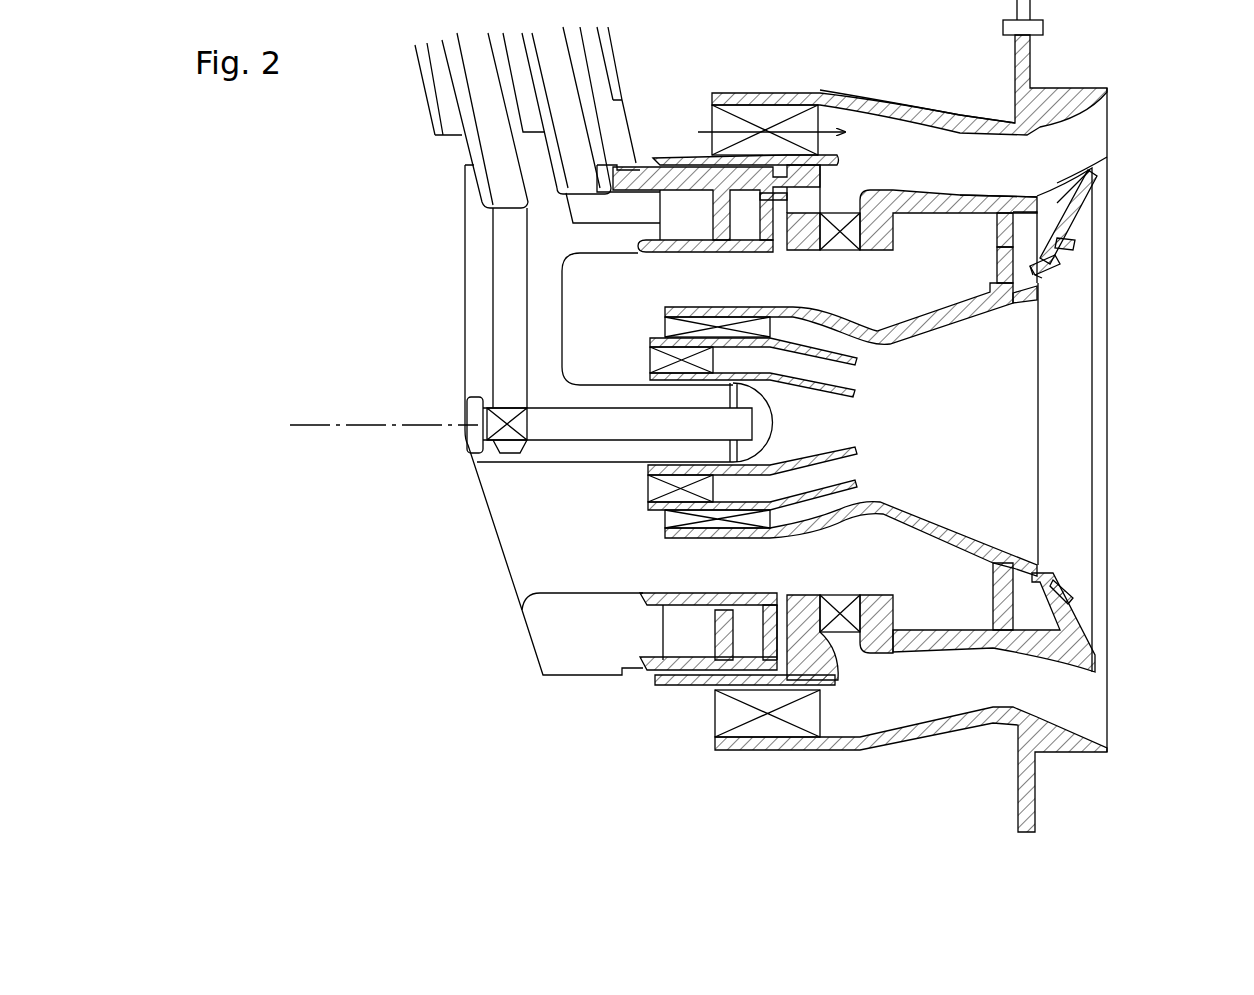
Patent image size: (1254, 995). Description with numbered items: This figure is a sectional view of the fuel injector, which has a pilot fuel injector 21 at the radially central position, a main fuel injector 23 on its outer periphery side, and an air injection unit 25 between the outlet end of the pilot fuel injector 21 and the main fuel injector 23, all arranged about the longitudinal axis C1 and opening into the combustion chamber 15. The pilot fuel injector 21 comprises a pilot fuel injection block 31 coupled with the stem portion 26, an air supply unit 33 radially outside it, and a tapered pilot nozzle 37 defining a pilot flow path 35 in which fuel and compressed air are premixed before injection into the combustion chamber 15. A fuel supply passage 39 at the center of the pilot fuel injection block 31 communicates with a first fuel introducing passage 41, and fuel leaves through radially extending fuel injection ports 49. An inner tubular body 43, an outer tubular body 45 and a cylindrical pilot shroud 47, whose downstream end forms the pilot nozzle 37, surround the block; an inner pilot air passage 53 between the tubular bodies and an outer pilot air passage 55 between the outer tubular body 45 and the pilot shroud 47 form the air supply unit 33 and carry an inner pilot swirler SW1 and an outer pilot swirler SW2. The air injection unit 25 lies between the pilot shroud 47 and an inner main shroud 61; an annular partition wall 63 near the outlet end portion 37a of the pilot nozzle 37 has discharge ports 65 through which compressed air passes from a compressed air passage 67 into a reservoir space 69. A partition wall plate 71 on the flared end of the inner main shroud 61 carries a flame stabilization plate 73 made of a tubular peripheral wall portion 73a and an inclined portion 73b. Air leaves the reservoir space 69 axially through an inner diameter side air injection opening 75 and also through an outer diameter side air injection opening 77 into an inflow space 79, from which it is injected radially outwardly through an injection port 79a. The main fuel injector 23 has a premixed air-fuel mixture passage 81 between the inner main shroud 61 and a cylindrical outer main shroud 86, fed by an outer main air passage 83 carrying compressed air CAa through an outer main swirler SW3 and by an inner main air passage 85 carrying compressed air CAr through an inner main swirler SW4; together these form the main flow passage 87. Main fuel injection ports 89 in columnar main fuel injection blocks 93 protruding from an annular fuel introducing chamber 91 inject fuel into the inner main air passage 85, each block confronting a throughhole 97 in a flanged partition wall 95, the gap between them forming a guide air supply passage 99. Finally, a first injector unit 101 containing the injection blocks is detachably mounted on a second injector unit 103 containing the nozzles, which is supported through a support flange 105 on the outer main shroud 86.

The combustion chamber 15 is at (1250, 466).
The pilot fuel injector 21 is at (1043, 433).
The main fuel injector 23 is at (1112, 118).
The air injection unit 25 is at (1080, 243).
The stem portion 26 is at (432, 100).
The pilot fuel injection block 31 is at (543, 463).
The air supply unit 33 is at (777, 413).
The pilot flow path 35 is at (964, 458).
The pilot nozzle 37 is at (930, 525).
The outlet end portion 37a is at (998, 303).
The fuel supply passage 39 is at (543, 423).
The first fuel introducing passage 41 is at (487, 127).
The inner tubular body 43 is at (660, 470).
The outer tubular body 45 is at (665, 512).
The pilot shroud 47 is at (693, 540).
The fuel injection ports 49 is at (745, 470).
The inner pilot air passage 53 is at (790, 330).
The outer pilot air passage 55 is at (812, 330).
The inner main shroud 61 is at (1057, 645).
The partition wall 63 is at (1002, 262).
The discharge ports 65 is at (1002, 230).
The compressed air passage 67 is at (921, 296).
The reservoir space 69 is at (1088, 176).
The partition wall plate 71 is at (1068, 212).
The flame stabilization plate 73 is at (1186, 278).
The peripheral wall portion 73a is at (1040, 278).
The inclined portion 73b is at (1063, 262).
The inner diameter side air injection opening 75 is at (1040, 300).
The outer diameter side air injection opening 77 is at (1043, 217).
The inflow space 79 is at (1070, 248).
The injection port 79a is at (1062, 244).
The premixed air-fuel mixture passage 81 is at (985, 185).
The outer main air passage 83 is at (822, 115).
The inner main air passage 85 is at (942, 133).
The outer main shroud 86 is at (1071, 88).
The main flow passage 87 is at (890, 102).
The main fuel injection ports 89 is at (836, 250).
The fuel introducing chamber 91 is at (723, 253).
The main fuel injection block 93 is at (832, 200).
The flanged partition wall 95 is at (797, 255).
The throughhole 97 is at (827, 180).
The guide air supply passage 99 is at (807, 233).
The first injector unit 101 is at (575, 683).
The second injector unit 103 is at (800, 756).
The support flange 105 is at (1018, 788).
The inner pilot swirler SW1 is at (650, 360).
The outer pilot swirler SW2 is at (665, 327).
The outer main swirler SW3 is at (717, 118).
The inner main swirler SW4 is at (880, 322).
The compressed air CAa is at (735, 130).
The compressed air CAr is at (850, 195).
The longitudinal axis C1 is at (370, 440).